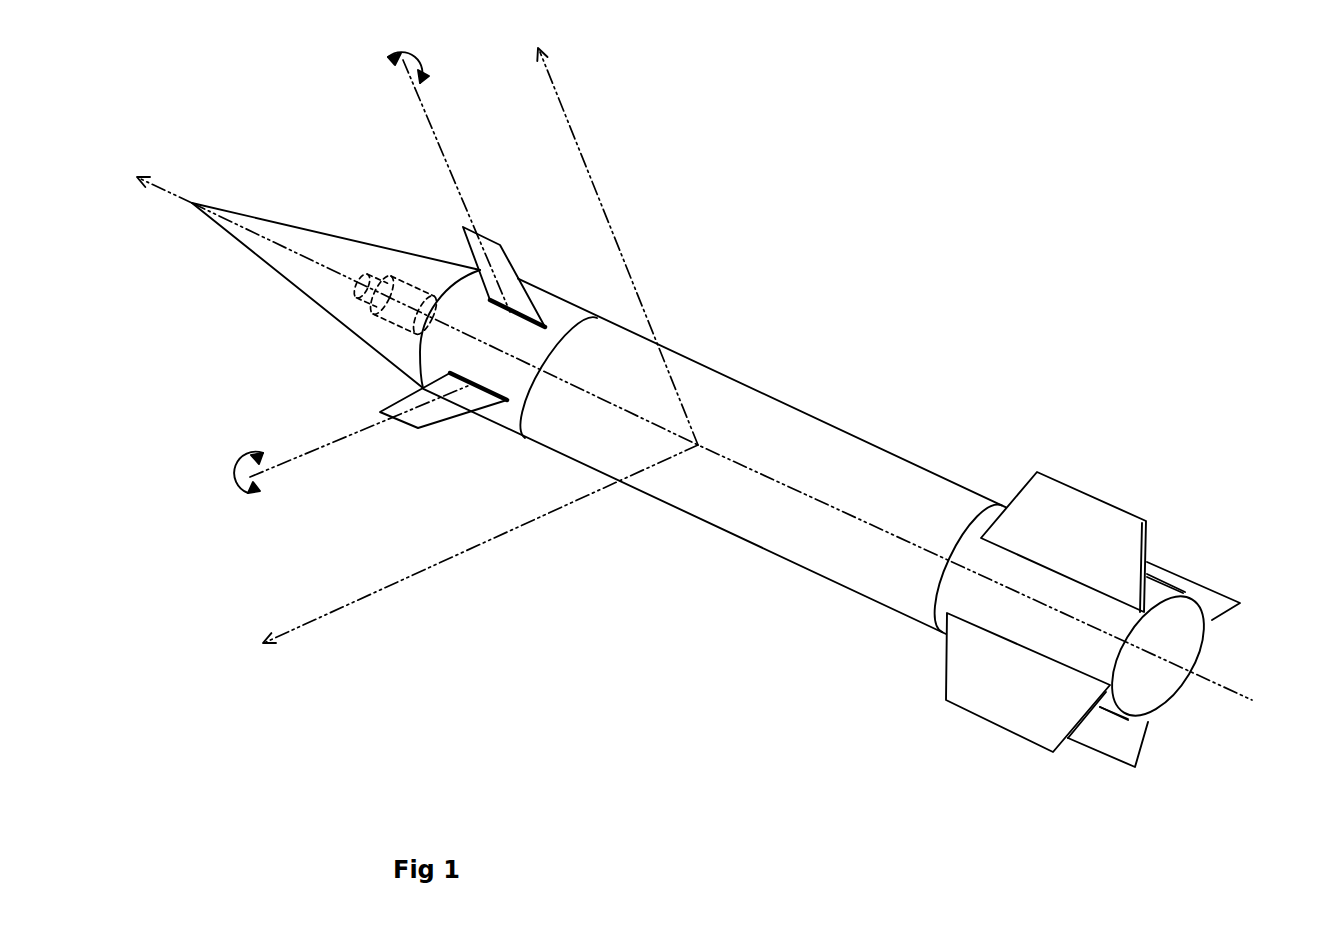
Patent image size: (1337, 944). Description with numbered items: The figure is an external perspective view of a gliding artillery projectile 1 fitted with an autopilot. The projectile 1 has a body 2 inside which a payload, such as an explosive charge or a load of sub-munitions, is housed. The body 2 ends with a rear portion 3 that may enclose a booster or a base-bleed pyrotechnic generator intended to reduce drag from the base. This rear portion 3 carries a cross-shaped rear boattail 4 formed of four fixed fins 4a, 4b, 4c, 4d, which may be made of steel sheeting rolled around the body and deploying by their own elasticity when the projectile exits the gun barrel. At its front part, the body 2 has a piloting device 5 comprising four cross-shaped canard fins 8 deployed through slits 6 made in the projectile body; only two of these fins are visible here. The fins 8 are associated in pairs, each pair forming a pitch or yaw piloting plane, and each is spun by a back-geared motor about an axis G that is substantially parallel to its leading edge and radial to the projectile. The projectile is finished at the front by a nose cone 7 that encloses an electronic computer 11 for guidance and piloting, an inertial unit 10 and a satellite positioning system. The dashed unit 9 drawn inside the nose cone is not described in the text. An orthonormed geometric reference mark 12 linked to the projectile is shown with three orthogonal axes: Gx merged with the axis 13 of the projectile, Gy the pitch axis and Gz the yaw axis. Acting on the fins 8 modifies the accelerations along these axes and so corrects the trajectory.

The gliding artillery projectile 1 is at (633, 644).
The body 2 is at (800, 432).
The rear portion 3 is at (997, 597).
The rear boattail 4 is at (1145, 469).
The fixed fin 4a is at (1110, 547).
The fixed fin 4b is at (984, 685).
The fixed fin 4c is at (1107, 742).
The fixed fin 4d is at (1217, 607).
The piloting device 5 is at (543, 300).
The slits 6 is at (552, 323).
The nose cone 7 is at (300, 240).
The canard fins 8 is at (499, 254).
The seeker unit 9 is at (362, 273).
The inertial unit 10 is at (357, 297).
The electronic computer 11 is at (390, 313).
The orthonormed geometric reference mark 12 is at (637, 247).
The axis of the projectile 13 is at (892, 532).